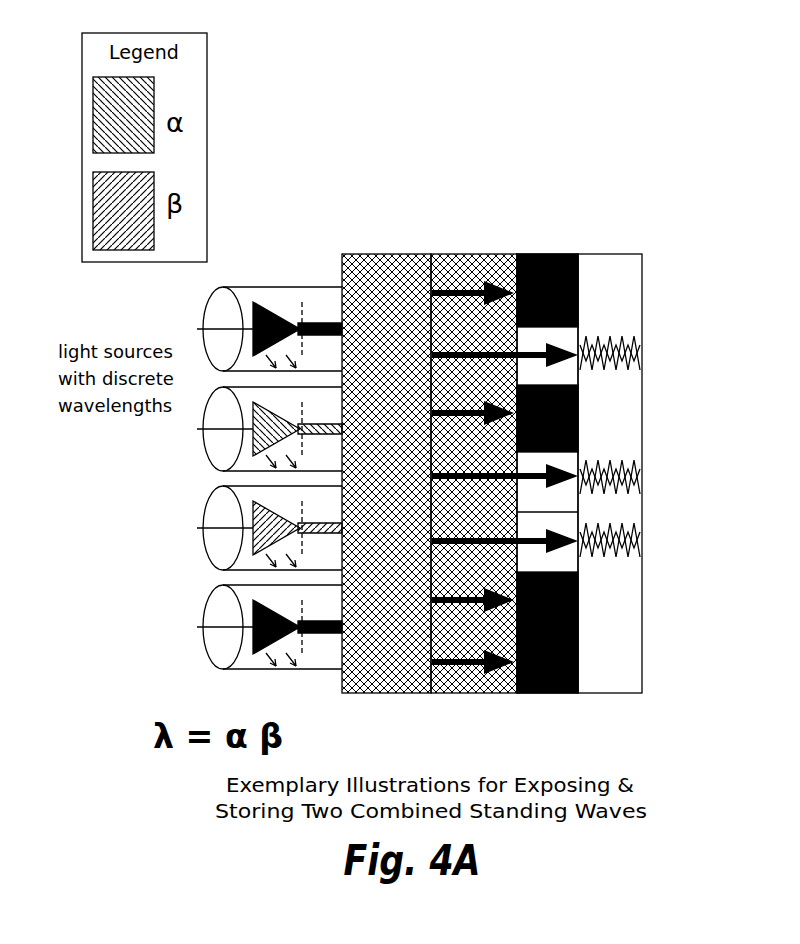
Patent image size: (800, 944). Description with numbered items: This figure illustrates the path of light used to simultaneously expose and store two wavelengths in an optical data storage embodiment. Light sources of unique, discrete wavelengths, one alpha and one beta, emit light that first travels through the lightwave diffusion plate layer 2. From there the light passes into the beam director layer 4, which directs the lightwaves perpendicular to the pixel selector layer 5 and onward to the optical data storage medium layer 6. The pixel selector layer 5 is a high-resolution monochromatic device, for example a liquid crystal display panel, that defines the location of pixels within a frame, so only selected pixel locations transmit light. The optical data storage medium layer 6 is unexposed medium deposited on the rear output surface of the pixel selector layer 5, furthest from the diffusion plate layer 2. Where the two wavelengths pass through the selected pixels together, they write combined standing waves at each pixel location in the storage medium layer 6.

The lightwave diffusion plate layer 2 is at (392, 696).
The beam director layer 4 is at (475, 696).
The pixel selector layer 5 is at (550, 696).
The optical data storage medium layer 6 is at (615, 696).